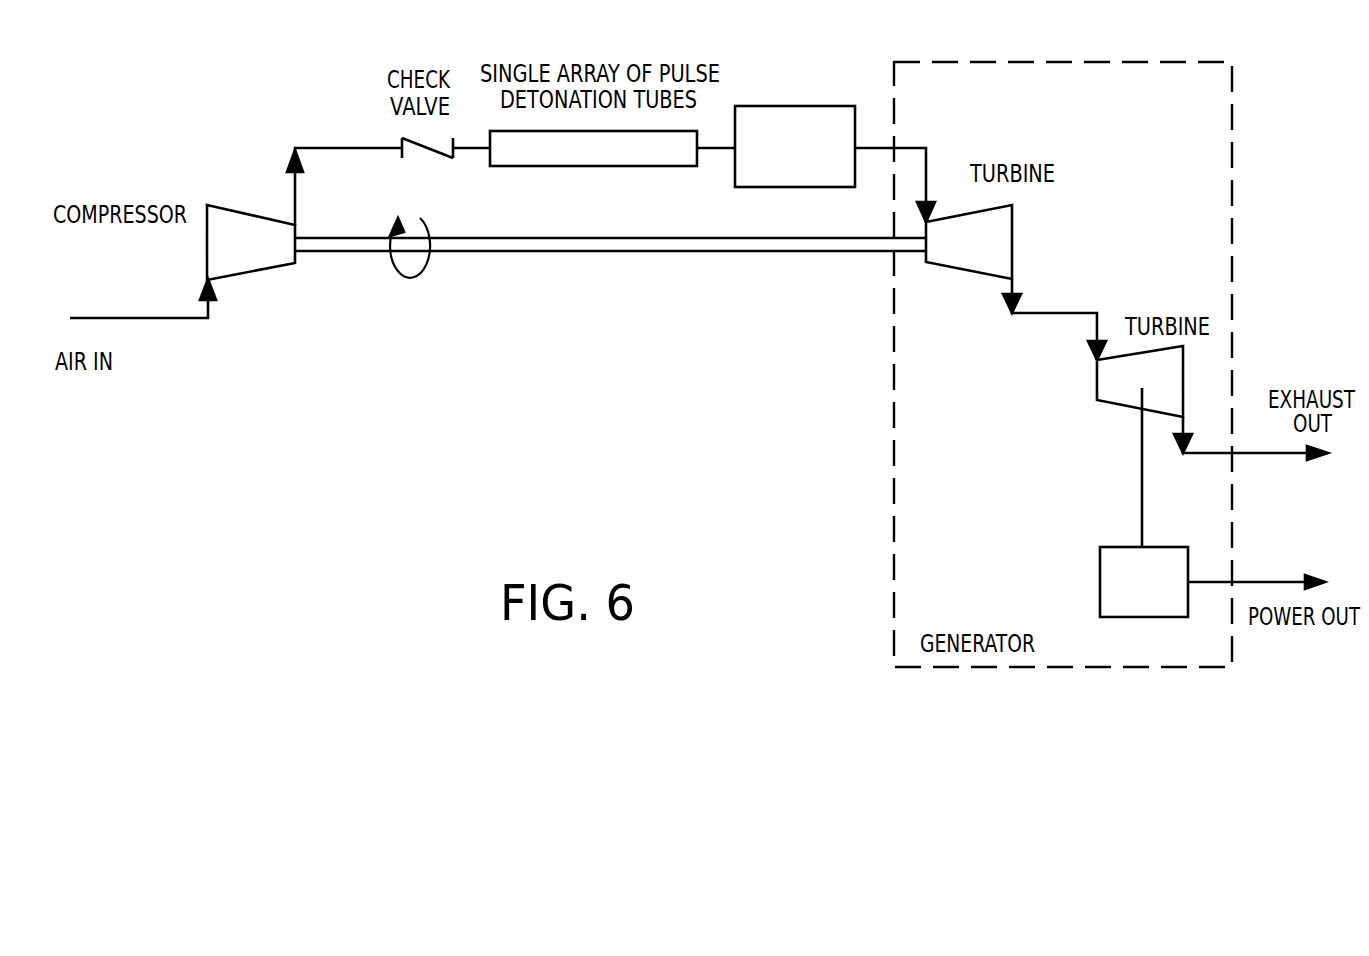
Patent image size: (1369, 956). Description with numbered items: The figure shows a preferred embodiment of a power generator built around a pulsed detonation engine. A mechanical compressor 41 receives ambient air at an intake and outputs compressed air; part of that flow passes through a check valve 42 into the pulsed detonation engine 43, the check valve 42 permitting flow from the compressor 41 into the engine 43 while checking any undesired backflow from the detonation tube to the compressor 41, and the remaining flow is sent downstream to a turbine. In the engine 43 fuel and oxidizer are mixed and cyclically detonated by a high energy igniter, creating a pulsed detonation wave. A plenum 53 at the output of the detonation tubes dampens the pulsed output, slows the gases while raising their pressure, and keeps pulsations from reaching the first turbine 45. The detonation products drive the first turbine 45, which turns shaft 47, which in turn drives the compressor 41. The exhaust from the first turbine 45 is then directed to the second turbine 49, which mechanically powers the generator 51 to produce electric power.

The mechanical compressor 41 is at (228, 205).
The check valve 42 is at (418, 155).
The pulsed detonation engine 43 is at (630, 166).
The first turbine 45 is at (1012, 247).
The shaft 47 is at (535, 255).
The second turbine 49 is at (1097, 388).
The generator 51 is at (1100, 592).
The plenum 53 is at (823, 106).